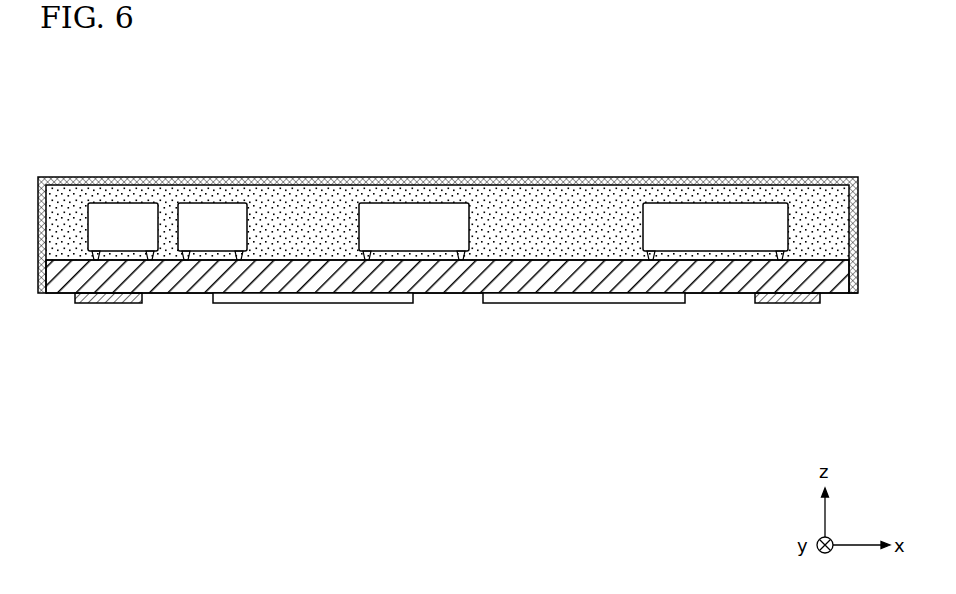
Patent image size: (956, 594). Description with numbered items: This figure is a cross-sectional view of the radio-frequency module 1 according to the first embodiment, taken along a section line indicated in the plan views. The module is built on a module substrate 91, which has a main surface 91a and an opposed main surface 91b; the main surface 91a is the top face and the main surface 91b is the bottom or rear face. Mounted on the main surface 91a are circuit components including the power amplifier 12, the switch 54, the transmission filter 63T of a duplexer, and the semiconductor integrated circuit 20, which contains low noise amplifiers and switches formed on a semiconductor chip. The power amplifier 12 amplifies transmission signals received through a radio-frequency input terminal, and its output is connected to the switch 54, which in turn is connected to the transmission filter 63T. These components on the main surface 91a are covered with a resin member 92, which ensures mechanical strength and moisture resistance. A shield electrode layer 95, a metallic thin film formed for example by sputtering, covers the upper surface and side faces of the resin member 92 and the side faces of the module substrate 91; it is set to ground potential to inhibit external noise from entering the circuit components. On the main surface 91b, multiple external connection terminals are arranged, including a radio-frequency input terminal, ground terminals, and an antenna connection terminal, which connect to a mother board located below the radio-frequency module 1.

The radio-frequency module 1 is at (832, 113).
The power amplifier 12 is at (88, 222).
The switch 54 is at (247, 225).
The transmission filter 63T is at (469, 228).
The semiconductor integrated circuit 20 is at (643, 226).
The shield electrode layer 95 is at (437, 177).
The resin member 92 is at (827, 197).
The module substrate 91 is at (851, 276).
The main surface 91a is at (841, 255).
The main surface 91b is at (841, 296).